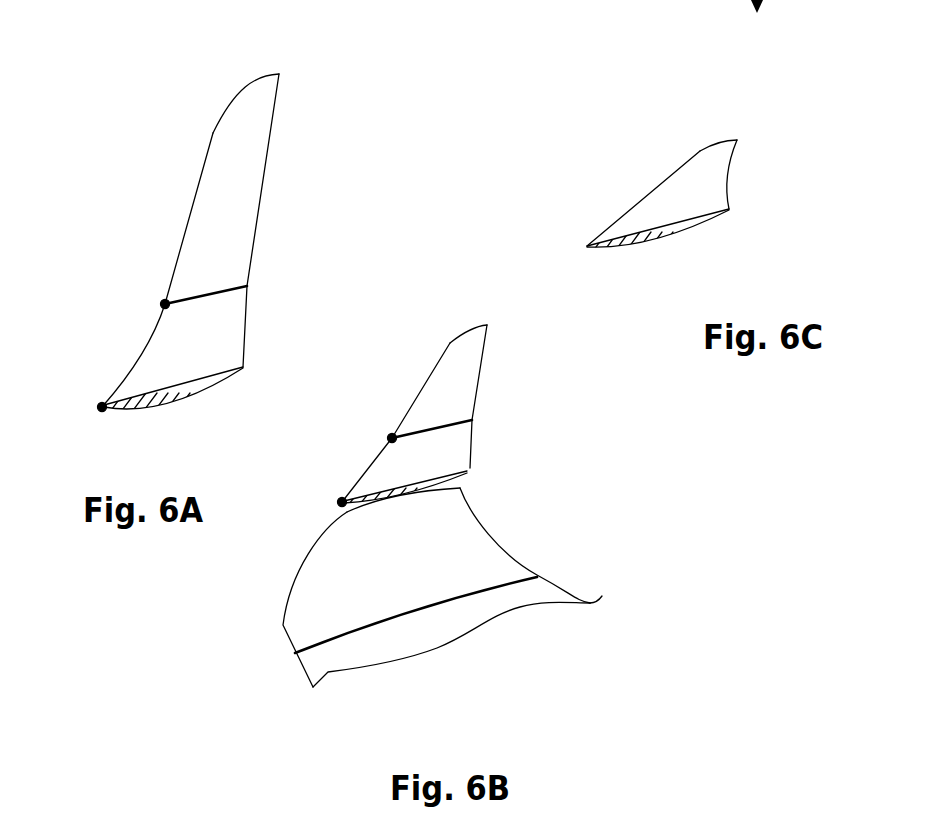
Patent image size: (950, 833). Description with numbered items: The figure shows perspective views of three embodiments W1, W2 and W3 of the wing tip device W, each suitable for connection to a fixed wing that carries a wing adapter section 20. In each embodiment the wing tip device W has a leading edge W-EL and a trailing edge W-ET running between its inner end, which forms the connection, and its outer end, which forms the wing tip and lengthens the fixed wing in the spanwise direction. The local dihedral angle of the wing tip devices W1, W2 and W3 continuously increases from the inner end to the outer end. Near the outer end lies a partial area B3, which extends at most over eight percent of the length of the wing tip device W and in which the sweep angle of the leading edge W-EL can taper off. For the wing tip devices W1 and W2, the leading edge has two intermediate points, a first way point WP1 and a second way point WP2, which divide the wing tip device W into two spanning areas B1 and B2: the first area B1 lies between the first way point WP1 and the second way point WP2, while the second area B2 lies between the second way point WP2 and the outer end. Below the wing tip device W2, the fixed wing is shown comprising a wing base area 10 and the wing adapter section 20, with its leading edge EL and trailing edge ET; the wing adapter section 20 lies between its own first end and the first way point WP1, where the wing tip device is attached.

In FIG. 6A, the wing tip device W is at (326, 94).
In FIG. 6B, the wing tip device W is at (479, 244).
In FIG. 6A, the wing tip device (first embodiment) W1 is at (217, 98).
In FIG. 6B, the wing tip device (second embodiment) W2 is at (494, 304).
In FIG. 6C, the wing tip device (third embodiment) W3 is at (721, 94).
In FIG. 6A, the first area B1 is at (157, 345).
In FIG. 6B, the first area B1 is at (462, 445).
In FIG. 6A, the second area B2 is at (258, 148).
In FIG. 6B, the second area B2 is at (482, 347).
In FIG. 6A, the partial area B3 is at (270, 80).
In FIG. 6B, the partial area B3 is at (477, 332).
In FIG. 6C, the partial area B3 is at (725, 152).
In FIG. 6A, the leading edge of the wing tip device W-EL is at (194, 234).
In FIG. 6B, the leading edge of the wing tip device W-EL is at (413, 400).
In FIG. 6C, the leading edge of the wing tip device W-EL is at (680, 167).
In FIG. 6A, the trailing edge of the wing tip device W-ET is at (264, 212).
In FIG. 6B, the trailing edge of the wing tip device W-ET is at (478, 402).
In FIG. 6C, the trailing edge of the wing tip device W-ET is at (734, 186).
In FIG. 6A, the first way point WP1 is at (99, 403).
In FIG. 6B, the first way point WP1 is at (342, 497).
In FIG. 6A, the second way point WP2 is at (162, 299).
In FIG. 6B, the second way point WP2 is at (390, 435).
In FIG. 6B, the wing base area 10 is at (452, 632).
In FIG. 6B, the wing adapter section 20 is at (453, 520).
In FIG. 6B, the leading edge EL is at (291, 671).
In FIG. 6B, the trailing edge ET is at (500, 548).